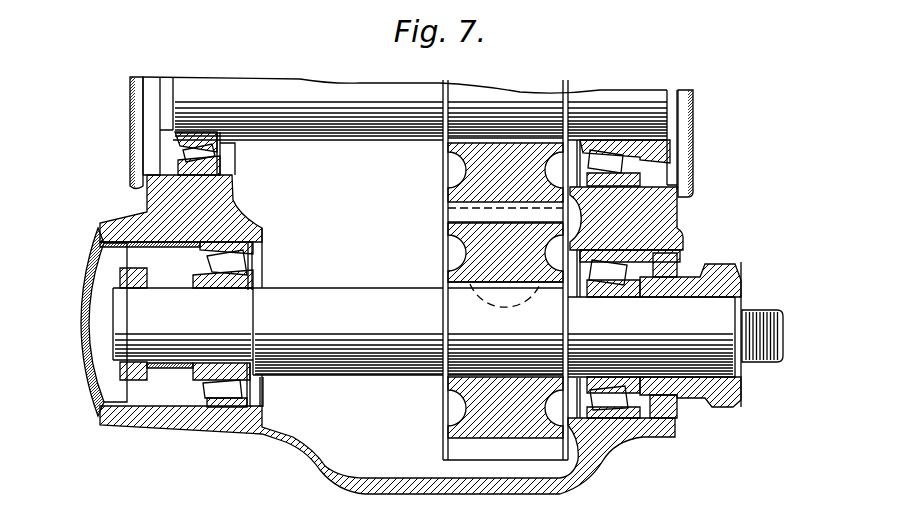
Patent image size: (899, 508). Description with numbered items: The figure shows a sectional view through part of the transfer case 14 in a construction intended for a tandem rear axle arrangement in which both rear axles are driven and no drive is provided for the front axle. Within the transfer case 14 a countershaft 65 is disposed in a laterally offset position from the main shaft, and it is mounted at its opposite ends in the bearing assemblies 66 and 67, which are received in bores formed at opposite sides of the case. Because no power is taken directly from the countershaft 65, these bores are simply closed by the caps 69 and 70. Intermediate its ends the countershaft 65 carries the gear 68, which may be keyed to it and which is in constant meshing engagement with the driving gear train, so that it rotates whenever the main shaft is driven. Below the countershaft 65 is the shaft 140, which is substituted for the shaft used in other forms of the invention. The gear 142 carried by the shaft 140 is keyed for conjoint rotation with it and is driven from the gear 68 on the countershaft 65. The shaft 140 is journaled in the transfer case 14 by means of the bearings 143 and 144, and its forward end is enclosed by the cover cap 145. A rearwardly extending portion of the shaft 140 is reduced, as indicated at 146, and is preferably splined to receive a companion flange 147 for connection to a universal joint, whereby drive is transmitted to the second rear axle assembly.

The transfer case 14 is at (144, 203).
The countershaft 65 is at (298, 92).
The bearing assembly 66 is at (221, 166).
The bearing assembly 67 is at (618, 176).
The gear 68 is at (472, 176).
The cap 69 is at (130, 115).
The cap 70 is at (695, 112).
The shaft 140 is at (322, 365).
The gear 142 is at (482, 250).
The bearing 143 is at (220, 406).
The bearing 144 is at (620, 409).
The cover cap 145 is at (86, 333).
The reduced portion 146 is at (738, 366).
The companion flange 147 is at (690, 277).